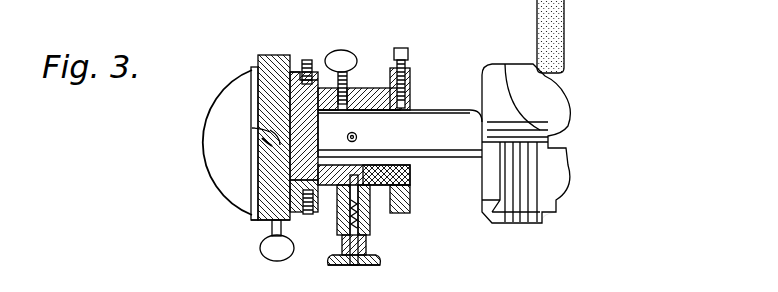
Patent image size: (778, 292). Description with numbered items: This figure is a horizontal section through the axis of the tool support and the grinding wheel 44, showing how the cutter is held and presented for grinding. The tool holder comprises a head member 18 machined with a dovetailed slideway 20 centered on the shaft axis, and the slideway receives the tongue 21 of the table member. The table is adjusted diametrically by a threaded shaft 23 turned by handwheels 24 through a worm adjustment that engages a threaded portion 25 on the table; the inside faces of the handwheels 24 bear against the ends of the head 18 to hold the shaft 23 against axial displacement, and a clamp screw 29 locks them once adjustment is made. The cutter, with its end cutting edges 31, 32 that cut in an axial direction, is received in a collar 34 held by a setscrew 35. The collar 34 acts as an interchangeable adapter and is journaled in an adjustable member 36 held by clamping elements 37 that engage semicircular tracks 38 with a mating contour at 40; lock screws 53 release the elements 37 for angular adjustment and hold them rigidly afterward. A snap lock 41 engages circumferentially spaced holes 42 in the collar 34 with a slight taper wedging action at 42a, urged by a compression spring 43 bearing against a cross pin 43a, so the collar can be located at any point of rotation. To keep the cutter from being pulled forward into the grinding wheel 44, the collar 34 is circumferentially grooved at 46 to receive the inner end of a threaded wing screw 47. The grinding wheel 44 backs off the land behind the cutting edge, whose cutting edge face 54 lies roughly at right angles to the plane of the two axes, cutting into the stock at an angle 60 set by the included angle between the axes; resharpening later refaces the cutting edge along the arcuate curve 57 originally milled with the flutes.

The head member 18 is at (258, 57).
The dovetailed slideway 20 is at (214, 160).
The tongue 21 is at (252, 139).
The threaded shaft 23 is at (268, 133).
The handwheels 24 is at (252, 128).
The threaded portion 25 is at (272, 130).
The clamp screw 29 is at (265, 257).
The cutting edge 31 is at (558, 203).
The cutting edge 32 is at (538, 224).
The collar 34 is at (410, 208).
The setscrew 35 is at (408, 62).
The adjustable member 36 is at (392, 186).
The clamping element 37 is at (312, 62).
The semicircular tracks 38 is at (300, 72).
The mating contour 40 is at (251, 220).
The snap lock 41 is at (385, 263).
The holes 42 is at (348, 90).
The taper 42a is at (400, 165).
The compression spring 43 is at (372, 224).
The cross pin 43a is at (362, 210).
The grinding wheel 44 is at (566, 56).
The circumferential groove 46 is at (342, 106).
The threaded wing screw 47 is at (335, 52).
The lock screws 53 is at (310, 215).
The cutting edge face 54 is at (555, 99).
The arcuate curve 57 is at (508, 95).
The angle 60 is at (548, 127).